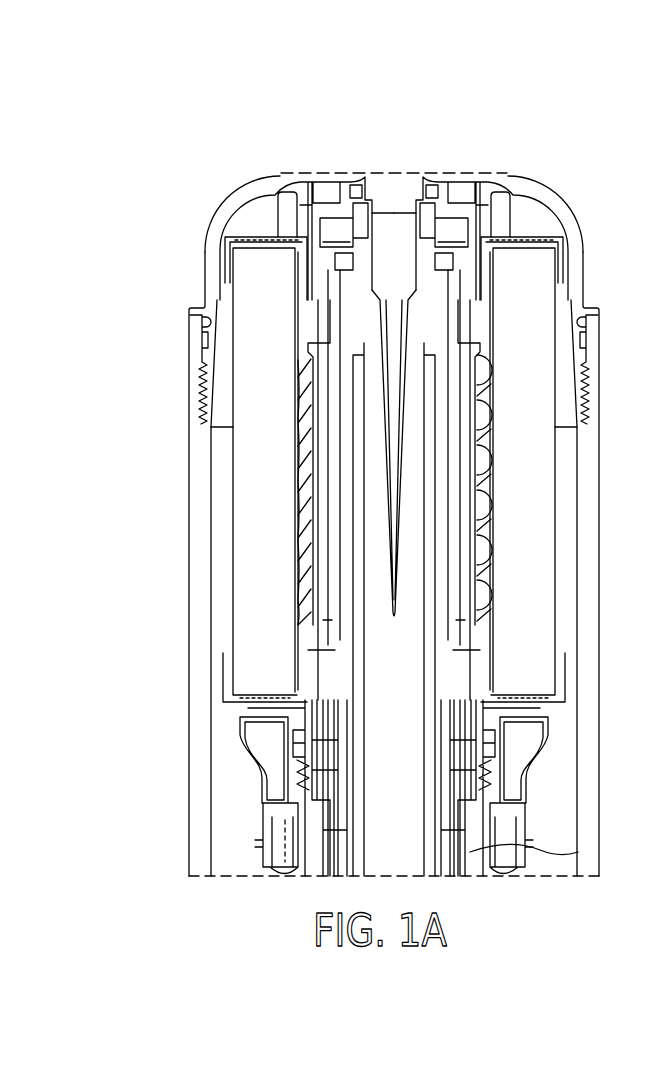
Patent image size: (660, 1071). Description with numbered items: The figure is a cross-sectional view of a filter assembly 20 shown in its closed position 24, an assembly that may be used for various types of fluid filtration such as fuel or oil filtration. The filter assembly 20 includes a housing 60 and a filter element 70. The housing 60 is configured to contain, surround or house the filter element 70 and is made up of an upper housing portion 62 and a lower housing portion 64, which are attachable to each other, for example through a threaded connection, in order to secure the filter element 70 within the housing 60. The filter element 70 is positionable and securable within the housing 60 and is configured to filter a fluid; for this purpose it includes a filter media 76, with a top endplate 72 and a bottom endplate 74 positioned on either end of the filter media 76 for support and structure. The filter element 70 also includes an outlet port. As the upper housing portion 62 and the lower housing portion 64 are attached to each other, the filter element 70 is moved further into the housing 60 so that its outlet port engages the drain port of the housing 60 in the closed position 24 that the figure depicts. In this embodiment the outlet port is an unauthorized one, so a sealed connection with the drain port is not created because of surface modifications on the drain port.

The filter assembly 20 is at (593, 159).
The closed position 24 is at (546, 168).
The housing 60 is at (186, 412).
The upper housing portion 62 is at (212, 222).
The lower housing portion 64 is at (188, 536).
The filter element 70 is at (559, 302).
The top endplate 72 is at (545, 237).
The bottom endplate 74 is at (551, 702).
The filter media 76 is at (546, 497).